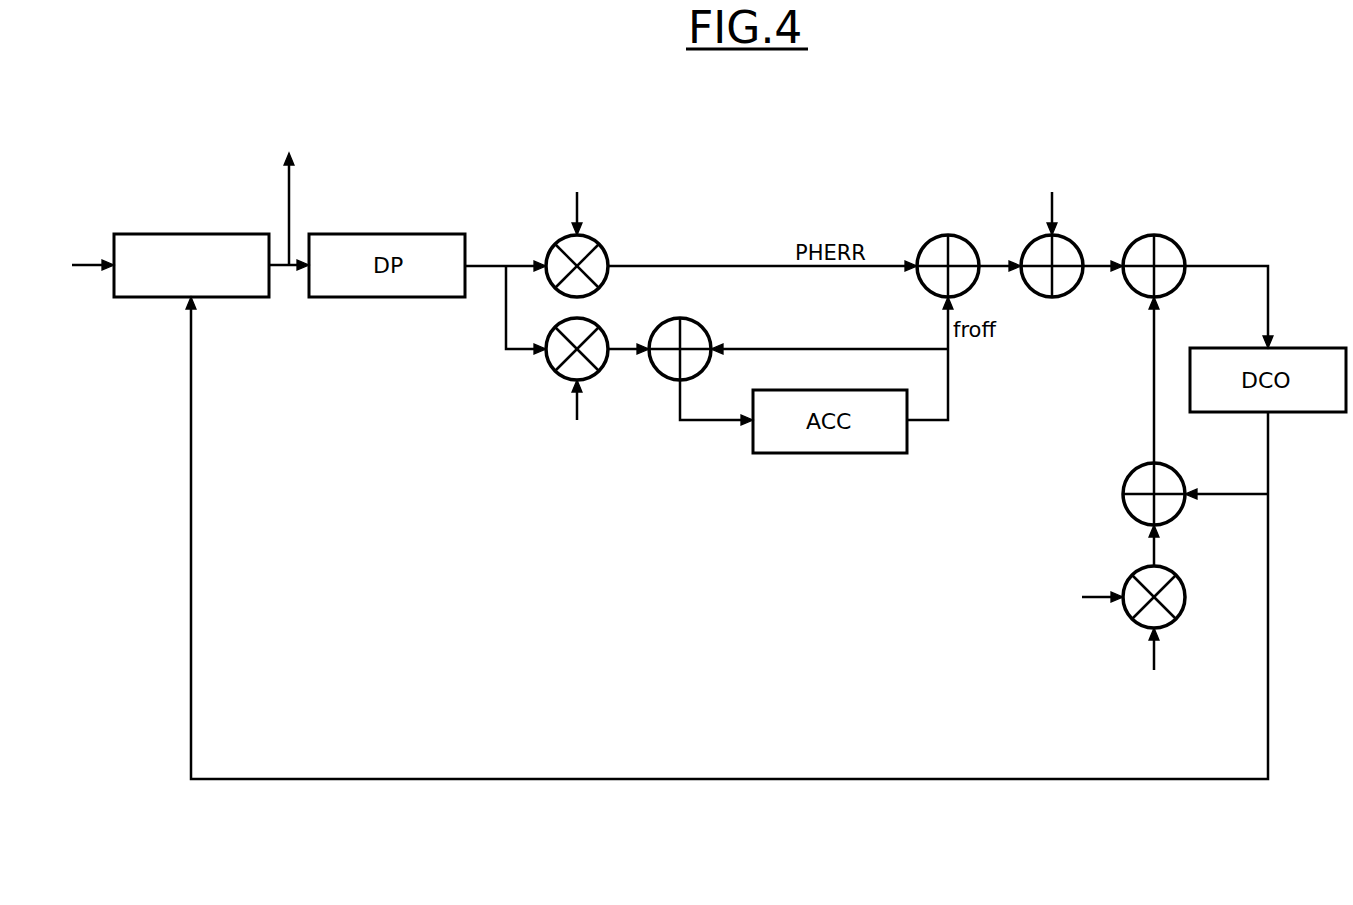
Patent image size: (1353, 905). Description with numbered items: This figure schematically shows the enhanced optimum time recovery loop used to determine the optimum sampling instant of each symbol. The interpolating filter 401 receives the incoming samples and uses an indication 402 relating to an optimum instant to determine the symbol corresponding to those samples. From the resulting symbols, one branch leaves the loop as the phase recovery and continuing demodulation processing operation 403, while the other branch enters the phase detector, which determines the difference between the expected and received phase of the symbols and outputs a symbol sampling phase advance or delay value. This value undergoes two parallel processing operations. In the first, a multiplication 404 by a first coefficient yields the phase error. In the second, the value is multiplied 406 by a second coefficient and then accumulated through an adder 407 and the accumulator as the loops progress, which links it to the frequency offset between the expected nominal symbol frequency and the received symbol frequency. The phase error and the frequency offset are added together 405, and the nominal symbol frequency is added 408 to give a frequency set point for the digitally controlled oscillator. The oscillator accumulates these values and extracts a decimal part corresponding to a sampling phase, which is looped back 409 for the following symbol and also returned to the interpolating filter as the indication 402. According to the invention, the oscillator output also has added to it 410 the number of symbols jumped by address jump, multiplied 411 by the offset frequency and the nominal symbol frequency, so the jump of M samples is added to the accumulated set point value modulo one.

The interpolating filter FINTERP 401 is at (190, 232).
The indication relating to an optimum instant 402 is at (192, 338).
The phase recovery and continuing demodulation processing operation 403 is at (290, 195).
The multiplication by coefficient COEFF1 404 is at (609, 258).
The addition of PHERR and froff 405 is at (981, 258).
The multiplication by coefficient COEFF2 406 is at (609, 341).
The accumulation adder 407 is at (713, 341).
The addition of nominal symbol frequency fsymbol 408 is at (1083, 258).
The loop-back of the sampling phase value 409 is at (1185, 258).
The addition of jumped-symbol correction 410 is at (1186, 486).
The multiplication of jump count by offset and nominal symbol frequency 411 is at (1186, 590).